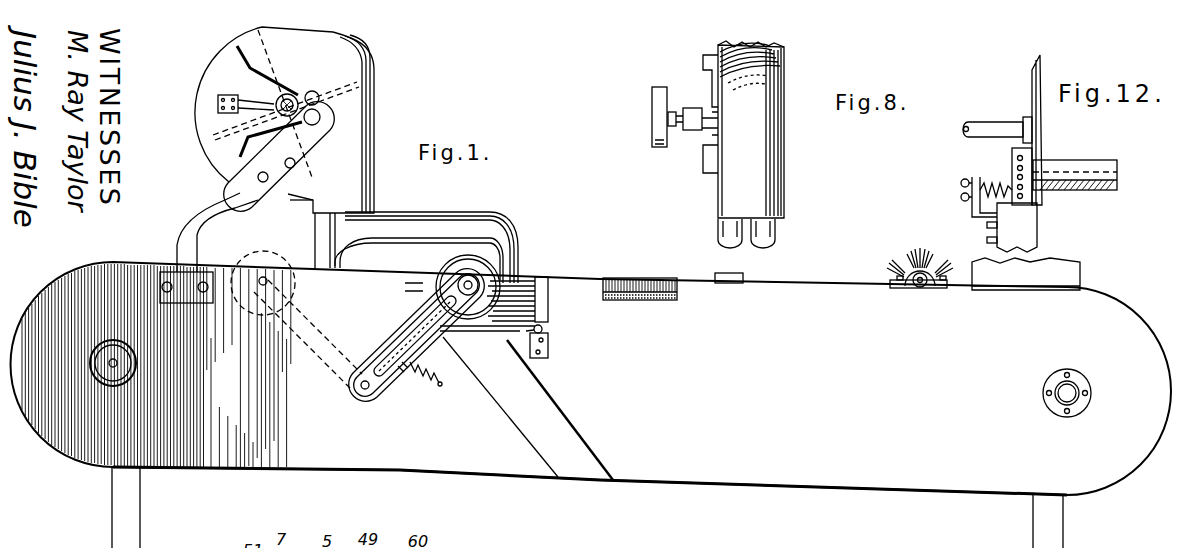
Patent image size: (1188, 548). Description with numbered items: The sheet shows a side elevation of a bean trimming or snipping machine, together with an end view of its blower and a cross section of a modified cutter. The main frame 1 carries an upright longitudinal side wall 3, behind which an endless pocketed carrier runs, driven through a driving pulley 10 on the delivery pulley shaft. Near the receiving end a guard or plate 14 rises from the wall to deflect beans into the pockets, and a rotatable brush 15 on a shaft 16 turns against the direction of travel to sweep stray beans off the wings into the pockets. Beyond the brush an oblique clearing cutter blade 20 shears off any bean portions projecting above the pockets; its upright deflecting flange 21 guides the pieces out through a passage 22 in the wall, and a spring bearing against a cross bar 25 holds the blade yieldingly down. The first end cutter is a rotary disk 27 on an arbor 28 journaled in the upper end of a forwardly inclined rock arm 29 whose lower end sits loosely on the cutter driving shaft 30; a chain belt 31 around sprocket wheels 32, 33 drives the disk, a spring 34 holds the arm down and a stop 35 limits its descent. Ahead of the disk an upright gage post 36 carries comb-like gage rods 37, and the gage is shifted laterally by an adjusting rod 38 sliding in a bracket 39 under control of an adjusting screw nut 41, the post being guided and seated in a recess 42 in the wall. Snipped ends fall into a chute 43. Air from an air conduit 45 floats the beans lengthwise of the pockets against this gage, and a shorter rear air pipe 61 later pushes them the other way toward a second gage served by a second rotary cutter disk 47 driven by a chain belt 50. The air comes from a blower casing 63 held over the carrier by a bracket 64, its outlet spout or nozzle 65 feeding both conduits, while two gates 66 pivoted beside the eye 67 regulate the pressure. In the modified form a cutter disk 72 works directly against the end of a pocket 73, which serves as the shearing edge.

In FIG. 1, the main frame 1 is at (587, 507).
In FIG. 1, the longitudinal side wall 3 is at (782, 470).
In FIG. 1, the driving pulley 10 is at (140, 350).
In FIG. 1, the guard or plate 14 is at (997, 278).
In FIG. 1, the rotatable brush 15 is at (920, 253).
In FIG. 1, the brush shaft 16 is at (920, 287).
In FIG. 1, the clearing cutter blade 20 is at (645, 295).
In FIG. 1, the deflecting flange 21 is at (638, 285).
In FIG. 1, the passage 22 is at (677, 290).
In FIG. 1, the cross bar 25 is at (745, 277).
In FIG. 1, the rotatable cutter blade 27 is at (447, 268).
In FIG. 1, the arbor 28 is at (423, 287).
In FIG. 1, the supporting rock arm 29 is at (427, 333).
In FIG. 1, the cutter driving shaft 30 is at (365, 392).
In FIG. 1, the chain belt 31 is at (400, 378).
In FIG. 1, the lower sprocket wheel 32 is at (343, 380).
In FIG. 1, the upper sprocket wheel 33 is at (470, 287).
In FIG. 1, the spring 34 is at (436, 381).
In FIG. 1, the stop 35 is at (445, 338).
In FIG. 1, the gage post 36 is at (543, 280).
In FIG. 1, the gage rods 37 is at (550, 308).
In FIG. 1, the adjusting rod 38 is at (548, 333).
In FIG. 1, the bracket 39 is at (548, 353).
In FIG. 1, the adjusting screw nut 41 is at (531, 333).
In FIG. 1, the recess 42 is at (550, 318).
In FIG. 1, the chute 43 is at (580, 420).
In FIG. 1, the air conduit 45 is at (516, 243).
In FIG. 8, the air conduit 45 is at (775, 230).
In FIG. 1, the second rotary cutter disk 47 is at (262, 248).
In FIG. 1, the chain belt 50 is at (308, 334).
In FIG. 1, the rear air pipe 61 is at (323, 223).
In FIG. 8, the rear air pipe 61 is at (728, 230).
In FIG. 1, the blower casing 63 is at (360, 108).
In FIG. 1, the bracket 64 is at (195, 212).
In FIG. 1, the outlet spout or nozzle 65 is at (350, 202).
In FIG. 8, the outlet spout or nozzle 65 is at (777, 202).
In FIG. 1, the gates 66 is at (307, 140).
In FIG. 8, the gates 66 is at (718, 148).
In FIG. 1, the eye of blower casing 67 is at (272, 100).
In FIG. 12, the cutter disk 72 is at (1037, 125).
In FIG. 12, the pocket 73 is at (1060, 163).